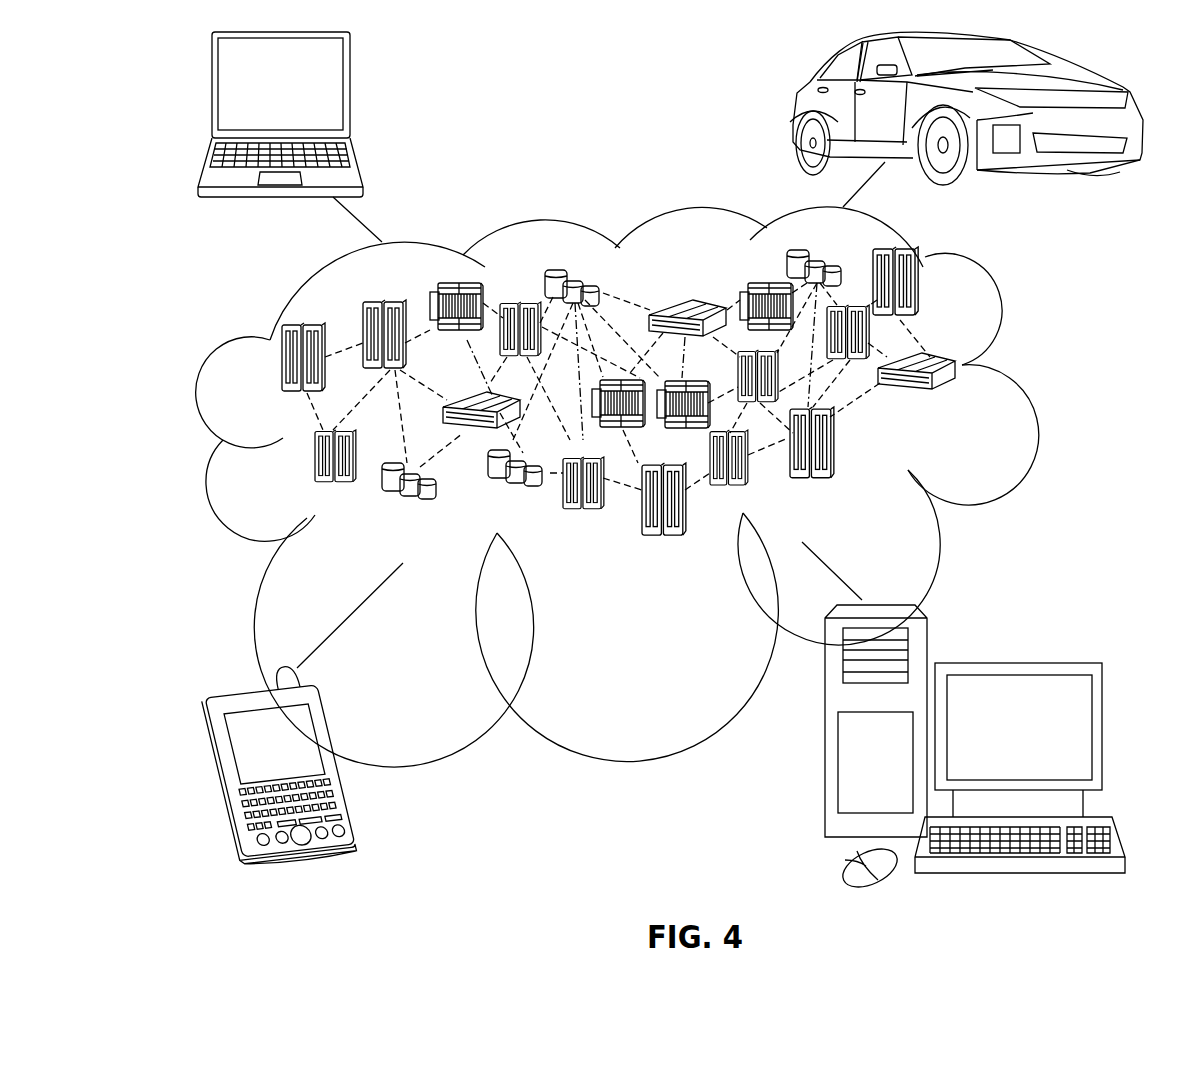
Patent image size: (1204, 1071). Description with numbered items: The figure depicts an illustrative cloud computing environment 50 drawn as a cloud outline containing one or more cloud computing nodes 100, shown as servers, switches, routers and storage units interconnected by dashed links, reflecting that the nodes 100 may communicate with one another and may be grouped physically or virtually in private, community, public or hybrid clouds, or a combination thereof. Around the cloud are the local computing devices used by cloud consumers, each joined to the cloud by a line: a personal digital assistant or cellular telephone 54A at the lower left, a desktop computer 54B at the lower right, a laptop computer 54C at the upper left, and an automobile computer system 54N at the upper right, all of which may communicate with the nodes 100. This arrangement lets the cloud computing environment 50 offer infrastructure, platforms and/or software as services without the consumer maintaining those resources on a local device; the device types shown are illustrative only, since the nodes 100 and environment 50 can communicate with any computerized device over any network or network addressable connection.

The cloud computing environment 50 is at (1020, 371).
The cloud computing nodes 100 is at (962, 400).
The personal digital assistant or cellular telephone 54A is at (342, 757).
The desktop computer 54B is at (1015, 660).
The laptop computer 54C is at (352, 93).
The automobile computer system 54N is at (793, 108).